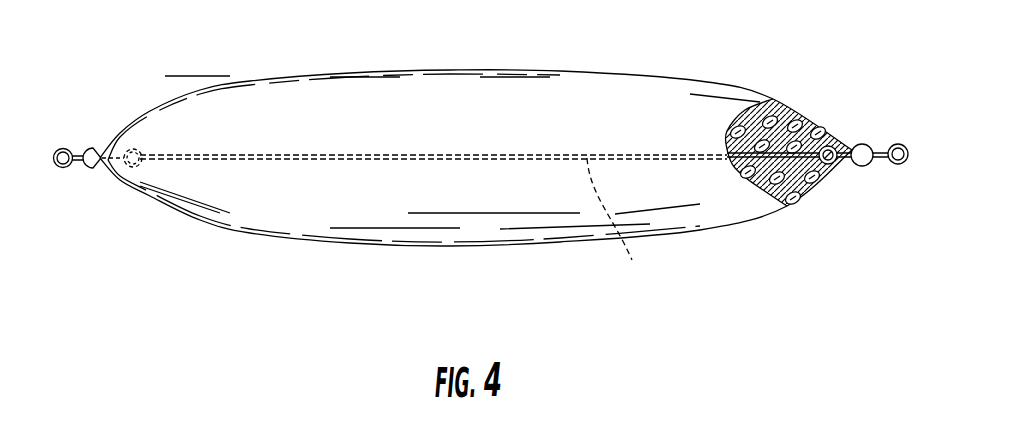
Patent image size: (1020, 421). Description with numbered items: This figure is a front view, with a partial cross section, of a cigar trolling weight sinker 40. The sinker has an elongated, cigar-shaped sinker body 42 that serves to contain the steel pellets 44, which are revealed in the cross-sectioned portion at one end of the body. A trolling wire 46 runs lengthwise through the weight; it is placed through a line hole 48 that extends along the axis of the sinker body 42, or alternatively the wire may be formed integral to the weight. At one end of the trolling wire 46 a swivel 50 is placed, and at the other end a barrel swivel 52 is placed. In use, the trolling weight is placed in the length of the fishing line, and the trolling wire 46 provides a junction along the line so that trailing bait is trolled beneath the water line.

The cigar trolling weight sinker 40 is at (465, 255).
The sinker body 42 is at (271, 113).
The steel pellets 44 is at (798, 160).
The trolling wire 46 is at (790, 202).
The line hole 48 is at (617, 226).
The swivel 50 is at (863, 167).
The barrel swivel 52 is at (90, 177).